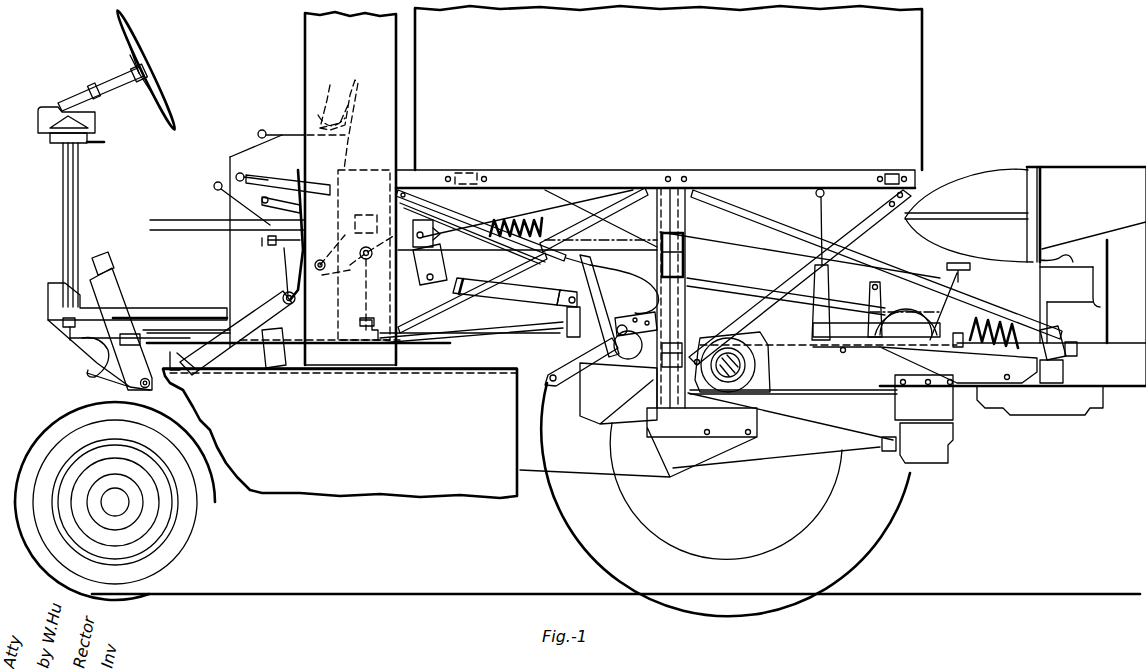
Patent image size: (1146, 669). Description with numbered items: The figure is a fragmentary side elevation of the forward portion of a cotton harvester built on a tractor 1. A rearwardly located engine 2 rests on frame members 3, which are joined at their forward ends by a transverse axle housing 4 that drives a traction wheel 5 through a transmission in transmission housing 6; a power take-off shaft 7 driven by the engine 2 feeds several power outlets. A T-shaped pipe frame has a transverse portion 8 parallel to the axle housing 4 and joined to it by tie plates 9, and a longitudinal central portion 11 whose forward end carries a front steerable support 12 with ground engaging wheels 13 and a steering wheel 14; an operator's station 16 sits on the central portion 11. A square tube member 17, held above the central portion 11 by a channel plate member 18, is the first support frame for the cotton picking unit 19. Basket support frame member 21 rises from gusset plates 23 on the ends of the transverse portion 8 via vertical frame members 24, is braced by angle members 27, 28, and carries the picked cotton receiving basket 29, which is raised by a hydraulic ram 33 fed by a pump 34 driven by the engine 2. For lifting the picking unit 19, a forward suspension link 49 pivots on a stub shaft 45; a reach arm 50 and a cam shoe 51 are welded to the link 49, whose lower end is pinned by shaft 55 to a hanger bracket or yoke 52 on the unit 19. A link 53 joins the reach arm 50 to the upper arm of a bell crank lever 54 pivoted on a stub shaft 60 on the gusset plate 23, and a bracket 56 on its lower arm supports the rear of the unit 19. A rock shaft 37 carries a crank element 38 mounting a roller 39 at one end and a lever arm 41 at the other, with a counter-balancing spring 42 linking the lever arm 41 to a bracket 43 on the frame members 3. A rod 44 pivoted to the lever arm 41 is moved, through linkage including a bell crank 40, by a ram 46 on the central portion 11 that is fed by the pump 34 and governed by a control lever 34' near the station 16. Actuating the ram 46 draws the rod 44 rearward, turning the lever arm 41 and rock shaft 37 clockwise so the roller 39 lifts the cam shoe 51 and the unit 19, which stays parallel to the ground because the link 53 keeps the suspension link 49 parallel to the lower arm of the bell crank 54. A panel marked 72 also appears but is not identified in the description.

The tractor 1 is at (1092, 167).
The engine 2 is at (1105, 255).
The frame members 3 is at (1129, 388).
The transverse axle housing 4 is at (762, 384).
The traction wheel 5 is at (892, 500).
The transmission housing 6 is at (806, 330).
The power take-off shaft 7 is at (878, 448).
The transverse portion 8 is at (645, 374).
The tie plates 9 is at (762, 355).
The central portion 11 is at (478, 362).
The front steerable support 12 is at (103, 390).
The ground engaging wheels 13 is at (46, 432).
The steering wheel 14 is at (165, 105).
The operator's seat or station 16 is at (290, 135).
The tube member 17 is at (355, 225).
The channel plate member 18 is at (358, 320).
The cotton picking unit 19 is at (402, 458).
The basket support frame member 21 is at (572, 172).
The gusset plates 23 is at (680, 372).
The vertical frame members 24 is at (655, 243).
The angle member 27 is at (870, 222).
The angle member 28 is at (530, 266).
The picked cotton receiving basket 29 is at (666, 76).
The hydraulic ram 33 is at (687, 243).
The pump 34 is at (876, 286).
The control lever 34' is at (223, 203).
The rock shaft 37 is at (281, 245).
The crank element 38 is at (297, 270).
The roller 39 is at (325, 266).
The bell crank 40 is at (448, 261).
The lever arm 41 is at (236, 178).
The counter-balancing spring 42 is at (528, 230).
The bracket 43 is at (1062, 366).
The rod 44 is at (287, 186).
The stub shaft 45 is at (420, 306).
The ram 46 is at (512, 308).
The forward suspension link 49 is at (361, 282).
The reach arm 50 is at (332, 125).
The cam shoe 51 is at (302, 366).
The hanger bracket or yoke 52 is at (262, 346).
The link 53 is at (493, 225).
The bell crank lever 54 is at (580, 356).
The shaft 55 is at (283, 294).
The bracket 56 is at (556, 390).
The stub shaft 60 is at (620, 350).
The panel 72 is at (368, 49).